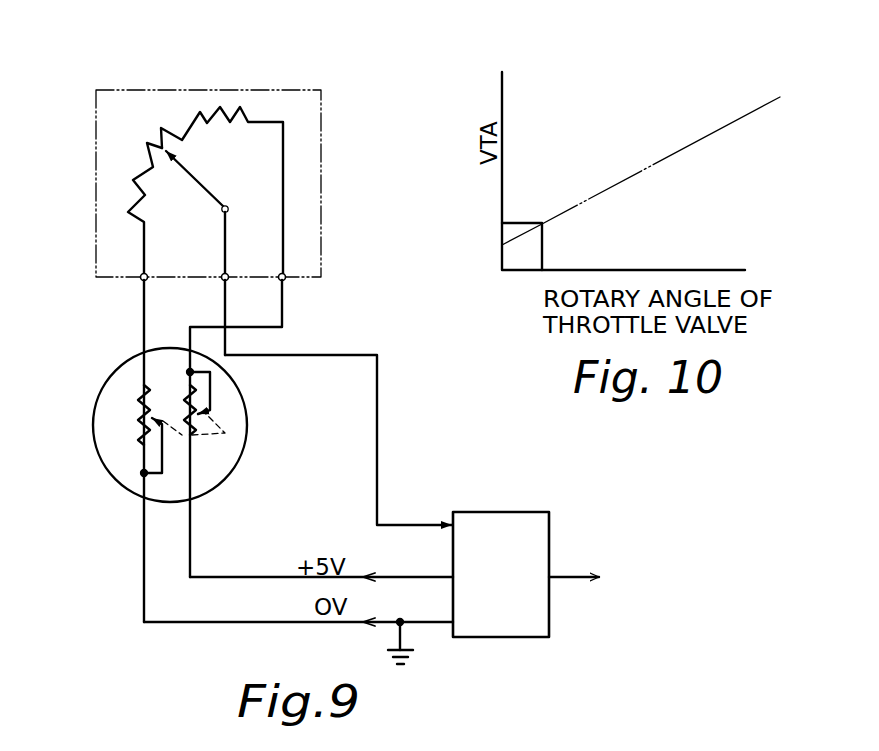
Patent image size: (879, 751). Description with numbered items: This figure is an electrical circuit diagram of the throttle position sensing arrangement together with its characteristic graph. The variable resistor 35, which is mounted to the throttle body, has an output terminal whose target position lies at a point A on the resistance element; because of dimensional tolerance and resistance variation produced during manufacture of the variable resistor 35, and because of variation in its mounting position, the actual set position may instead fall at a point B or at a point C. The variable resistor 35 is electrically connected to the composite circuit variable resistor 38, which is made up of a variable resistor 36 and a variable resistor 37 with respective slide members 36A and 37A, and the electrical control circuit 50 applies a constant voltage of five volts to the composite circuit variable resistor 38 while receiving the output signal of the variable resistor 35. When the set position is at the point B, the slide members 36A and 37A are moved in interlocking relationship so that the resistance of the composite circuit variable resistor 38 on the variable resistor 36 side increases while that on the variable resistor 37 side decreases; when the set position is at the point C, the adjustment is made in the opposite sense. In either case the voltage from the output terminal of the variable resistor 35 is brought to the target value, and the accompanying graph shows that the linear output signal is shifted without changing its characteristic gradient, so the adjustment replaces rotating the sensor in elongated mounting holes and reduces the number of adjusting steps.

The variable resistor 35 is at (223, 167).
The point A is at (157, 146).
The point B is at (136, 170).
The point C is at (201, 110).
The variable resistor 36 is at (137, 405).
The slide member 36A is at (150, 416).
The variable resistor 37 is at (191, 437).
The slide member 37A is at (206, 410).
The composite circuit variable resistor 38 is at (182, 451).
The electrical control circuit 50 is at (510, 512).